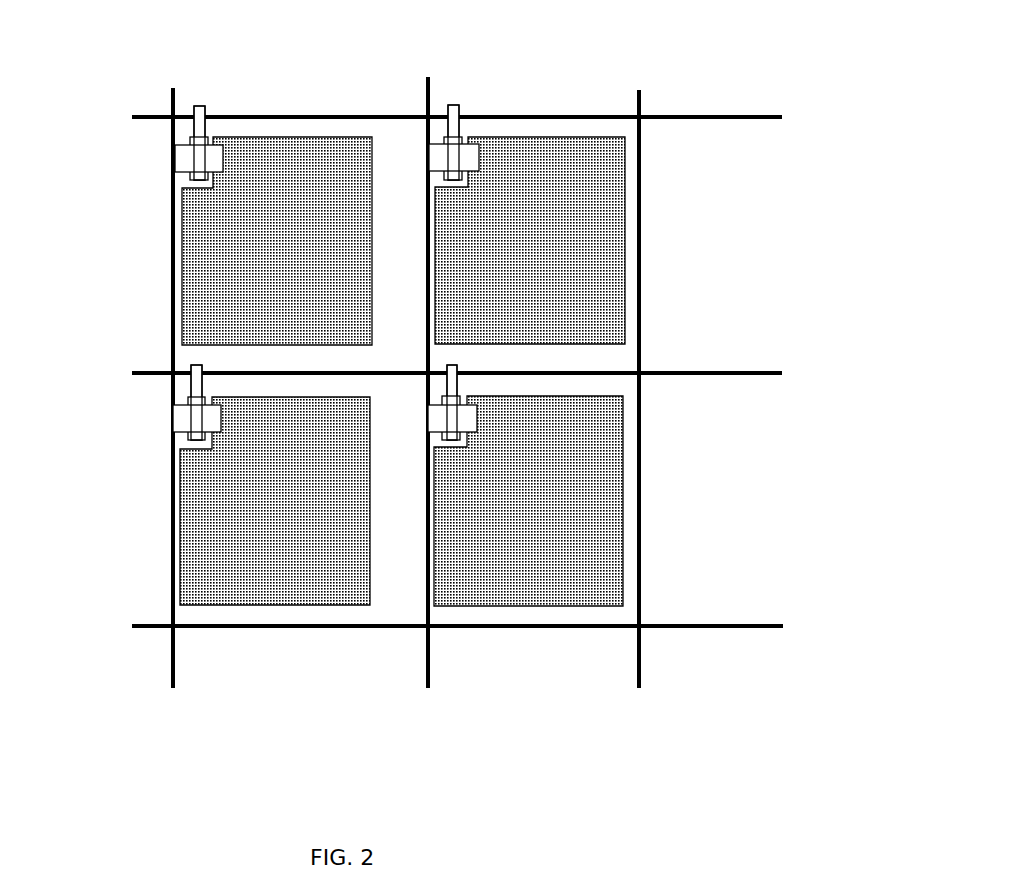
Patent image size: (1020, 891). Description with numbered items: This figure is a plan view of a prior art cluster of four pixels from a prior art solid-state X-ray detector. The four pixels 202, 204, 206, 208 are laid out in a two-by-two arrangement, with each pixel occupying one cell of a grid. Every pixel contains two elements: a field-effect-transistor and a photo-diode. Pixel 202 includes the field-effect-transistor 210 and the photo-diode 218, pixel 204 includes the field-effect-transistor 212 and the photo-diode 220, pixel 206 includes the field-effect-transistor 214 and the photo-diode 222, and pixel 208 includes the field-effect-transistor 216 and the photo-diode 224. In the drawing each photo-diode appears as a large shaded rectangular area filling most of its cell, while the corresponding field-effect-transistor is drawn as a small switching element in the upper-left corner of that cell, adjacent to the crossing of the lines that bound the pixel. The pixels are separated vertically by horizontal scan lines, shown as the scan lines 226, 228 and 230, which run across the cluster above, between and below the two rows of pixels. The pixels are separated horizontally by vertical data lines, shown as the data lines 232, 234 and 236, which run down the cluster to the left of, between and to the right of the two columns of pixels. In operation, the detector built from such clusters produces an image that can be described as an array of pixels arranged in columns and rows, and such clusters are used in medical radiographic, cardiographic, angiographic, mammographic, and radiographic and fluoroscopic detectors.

The pixel 202 is at (224, 213).
The pixel 204 is at (574, 196).
The pixel 206 is at (221, 511).
The pixel 208 is at (578, 510).
The field-effect-transistor 210 is at (185, 158).
The field-effect-transistor 212 is at (454, 120).
The field-effect-transistor 214 is at (183, 418).
The field-effect-transistor 216 is at (467, 418).
The photo-diode 218 is at (345, 152).
The photo-diode 220 is at (528, 147).
The photo-diode 222 is at (328, 587).
The photo-diode 224 is at (564, 583).
The scan line 226 is at (710, 112).
The scan line 228 is at (709, 370).
The scan line 230 is at (758, 628).
The data line 232 is at (175, 668).
The data line 234 is at (430, 663).
The data line 236 is at (641, 662).